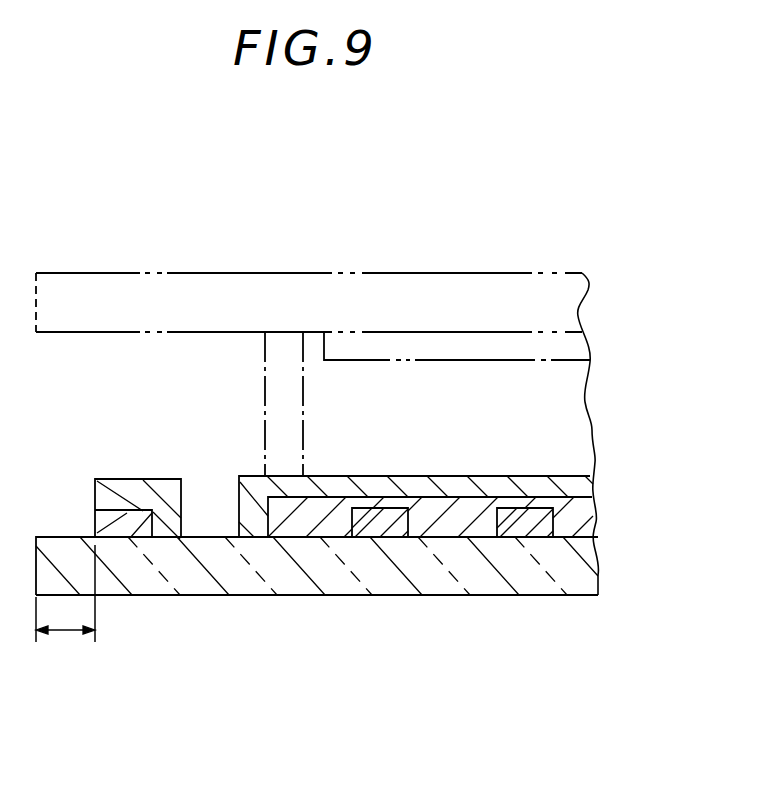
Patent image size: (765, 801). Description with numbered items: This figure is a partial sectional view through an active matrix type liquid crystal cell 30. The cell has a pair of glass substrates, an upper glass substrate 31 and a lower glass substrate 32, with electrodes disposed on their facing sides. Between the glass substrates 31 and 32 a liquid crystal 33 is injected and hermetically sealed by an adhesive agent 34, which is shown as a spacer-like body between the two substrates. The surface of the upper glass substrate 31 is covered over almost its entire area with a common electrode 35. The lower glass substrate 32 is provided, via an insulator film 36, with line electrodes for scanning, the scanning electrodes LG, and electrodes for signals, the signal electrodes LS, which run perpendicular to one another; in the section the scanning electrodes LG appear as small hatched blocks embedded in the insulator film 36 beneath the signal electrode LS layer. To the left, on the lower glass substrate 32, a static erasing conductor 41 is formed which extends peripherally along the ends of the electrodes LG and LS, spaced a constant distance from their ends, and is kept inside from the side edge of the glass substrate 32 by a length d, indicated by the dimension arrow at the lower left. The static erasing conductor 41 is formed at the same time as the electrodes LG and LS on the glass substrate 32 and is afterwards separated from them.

The liquid crystal cell 30 is at (502, 230).
The upper glass substrate 31 is at (402, 297).
The lower glass substrate 32 is at (573, 568).
The liquid crystal 33 is at (553, 423).
The adhesive agent 34 is at (277, 397).
The common electrode 35 is at (557, 353).
The insulator film 36 is at (586, 513).
The static erasing conductor 41 is at (117, 464).
The signal electrodes LS is at (581, 484).
The scanning electrodes LG is at (515, 538).
The length d is at (62, 632).